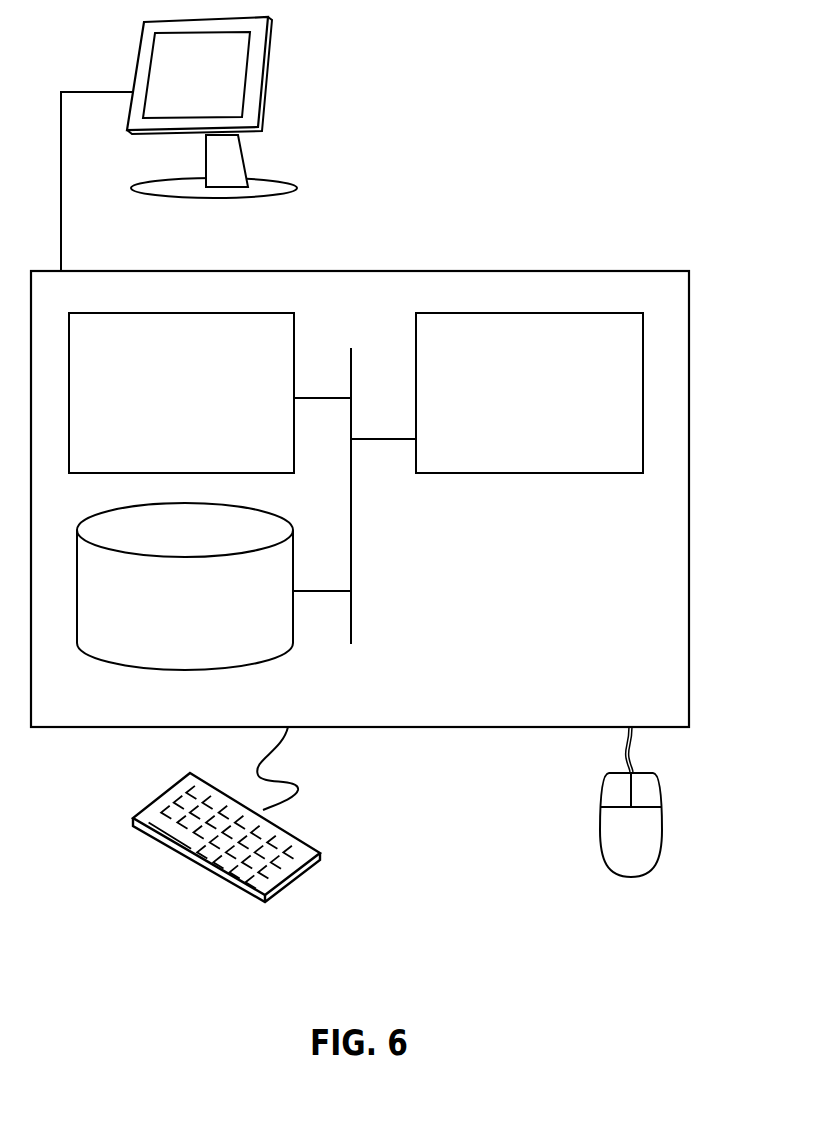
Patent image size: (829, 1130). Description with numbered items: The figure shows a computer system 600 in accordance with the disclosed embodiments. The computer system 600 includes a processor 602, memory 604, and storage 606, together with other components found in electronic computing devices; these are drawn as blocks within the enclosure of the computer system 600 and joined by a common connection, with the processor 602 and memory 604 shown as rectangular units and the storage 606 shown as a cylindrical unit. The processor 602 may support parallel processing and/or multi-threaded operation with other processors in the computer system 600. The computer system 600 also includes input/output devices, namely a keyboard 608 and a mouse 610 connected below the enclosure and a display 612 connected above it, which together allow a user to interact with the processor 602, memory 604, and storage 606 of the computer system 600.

The computer system 600 is at (405, 250).
The processor 602 is at (512, 406).
The memory 604 is at (163, 406).
The storage 606 is at (169, 616).
The keyboard 608 is at (152, 837).
The mouse 610 is at (610, 846).
The display 612 is at (179, 144).